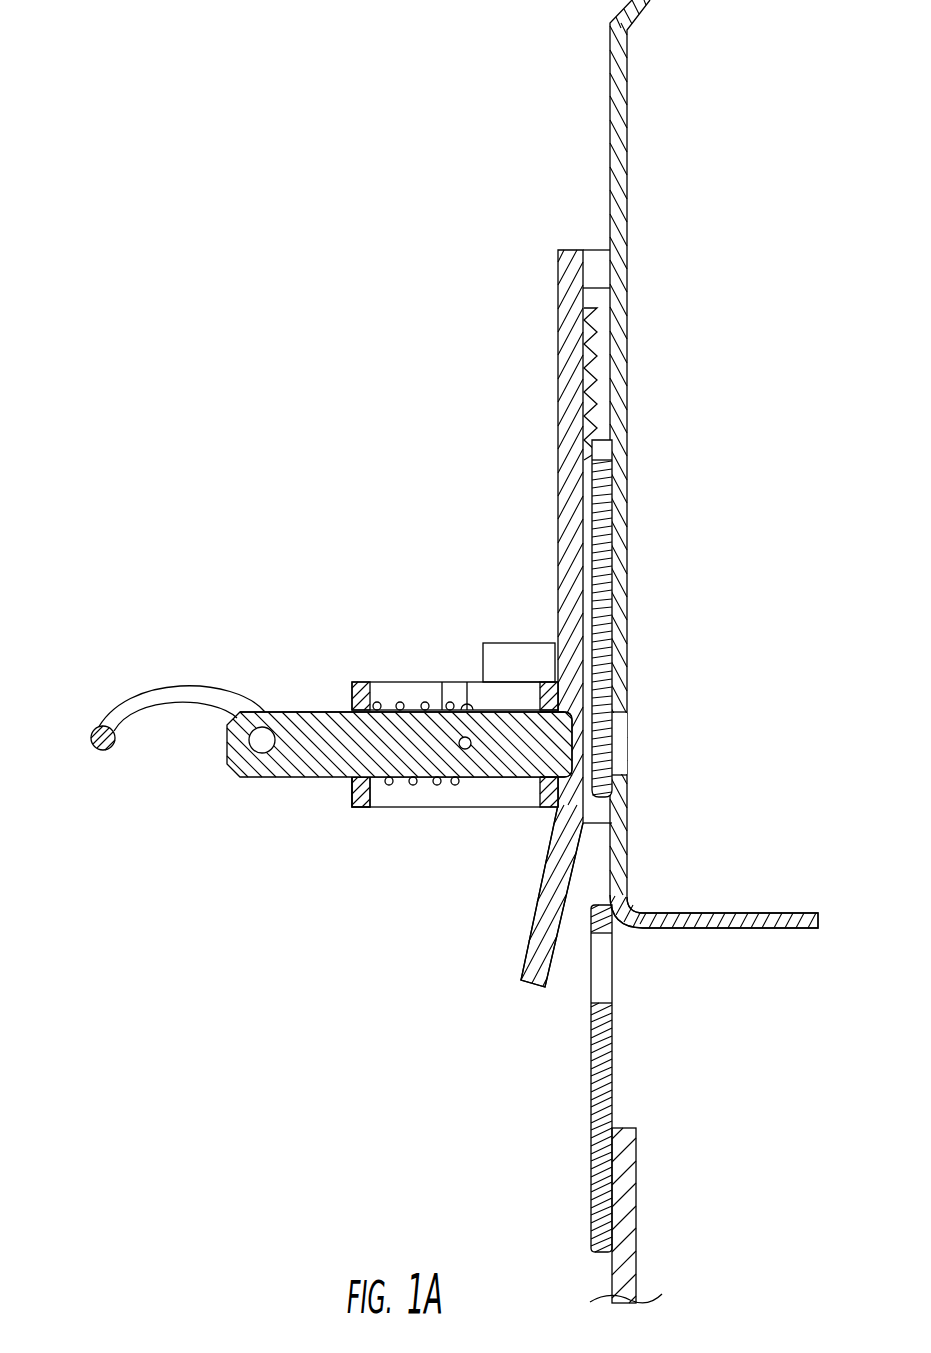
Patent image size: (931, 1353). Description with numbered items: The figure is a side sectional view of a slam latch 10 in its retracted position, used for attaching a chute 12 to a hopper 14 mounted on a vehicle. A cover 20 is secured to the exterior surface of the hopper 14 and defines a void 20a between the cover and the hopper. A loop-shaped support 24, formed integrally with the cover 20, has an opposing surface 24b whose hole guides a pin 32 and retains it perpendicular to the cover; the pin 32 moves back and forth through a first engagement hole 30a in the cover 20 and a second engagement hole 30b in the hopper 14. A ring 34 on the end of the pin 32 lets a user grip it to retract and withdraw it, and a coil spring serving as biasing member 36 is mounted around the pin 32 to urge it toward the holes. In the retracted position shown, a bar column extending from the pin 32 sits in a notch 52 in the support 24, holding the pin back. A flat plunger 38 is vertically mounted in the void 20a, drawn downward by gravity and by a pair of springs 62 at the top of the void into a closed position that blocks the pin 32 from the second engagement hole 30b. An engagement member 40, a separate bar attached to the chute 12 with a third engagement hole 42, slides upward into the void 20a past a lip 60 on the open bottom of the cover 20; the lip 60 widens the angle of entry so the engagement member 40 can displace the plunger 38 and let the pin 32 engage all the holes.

The slam latch 10 is at (783, 95).
The chute 12 is at (637, 1244).
The hopper 14 is at (775, 910).
The cover 20 is at (558, 327).
The void 20a is at (592, 530).
The support 24 is at (460, 807).
The opposing surface 24b is at (355, 807).
The first engagement hole 30a is at (600, 720).
The second engagement hole 30b is at (628, 767).
The pin 32 is at (322, 708).
The ring 34 is at (113, 712).
The biasing member 36 is at (437, 790).
The plunger 38 is at (628, 718).
The engagement member 40 is at (590, 1157).
The third engagement hole 42 is at (605, 968).
The notch 52 is at (442, 682).
The lip 60 is at (533, 983).
The springs 62 is at (592, 407).